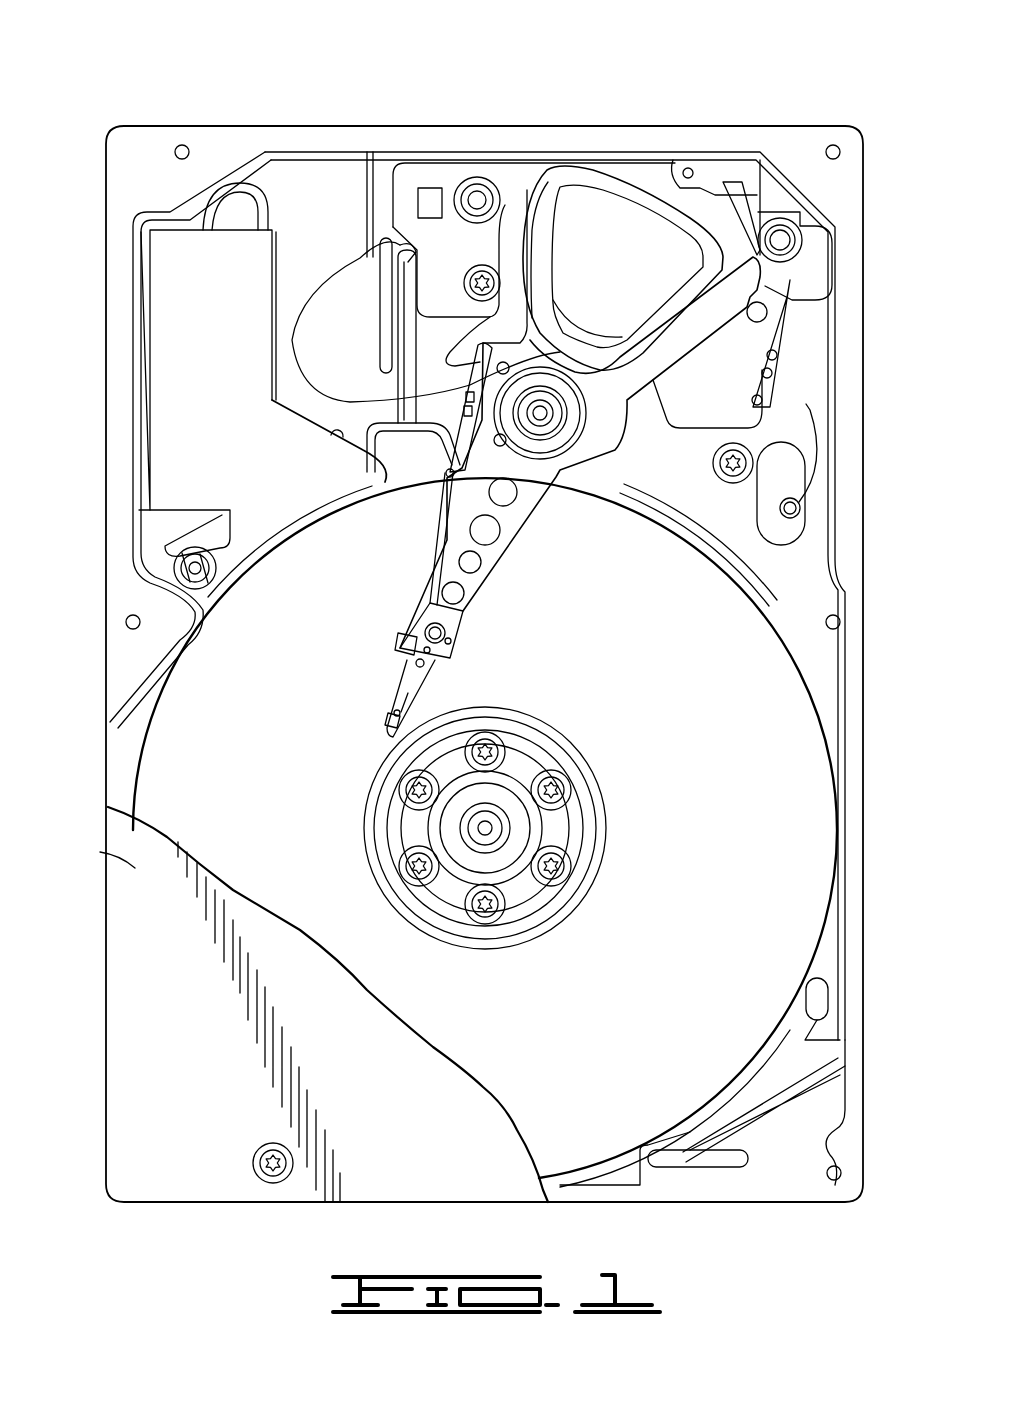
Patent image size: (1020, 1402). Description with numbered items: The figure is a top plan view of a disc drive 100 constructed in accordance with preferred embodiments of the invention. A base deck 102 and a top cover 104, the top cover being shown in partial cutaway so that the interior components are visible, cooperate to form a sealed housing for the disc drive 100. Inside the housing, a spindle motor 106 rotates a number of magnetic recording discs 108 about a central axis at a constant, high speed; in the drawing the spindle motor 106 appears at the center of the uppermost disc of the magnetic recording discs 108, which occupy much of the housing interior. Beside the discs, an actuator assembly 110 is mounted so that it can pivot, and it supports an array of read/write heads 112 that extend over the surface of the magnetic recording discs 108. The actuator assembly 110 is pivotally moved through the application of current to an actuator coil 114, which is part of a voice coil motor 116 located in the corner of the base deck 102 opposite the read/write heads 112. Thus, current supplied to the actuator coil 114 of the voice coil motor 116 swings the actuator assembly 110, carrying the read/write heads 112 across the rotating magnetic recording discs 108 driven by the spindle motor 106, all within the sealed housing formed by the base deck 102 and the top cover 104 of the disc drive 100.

The disc drive 100 is at (185, 92).
The base deck 102 is at (300, 405).
The top cover 104 is at (135, 868).
The spindle motor 106 is at (506, 800).
The magnetic recording discs 108 is at (770, 818).
The actuator assembly 110 is at (551, 478).
The read/write heads 112 is at (387, 730).
The actuator coil 114 is at (607, 180).
The voice coil motor 116 is at (657, 172).